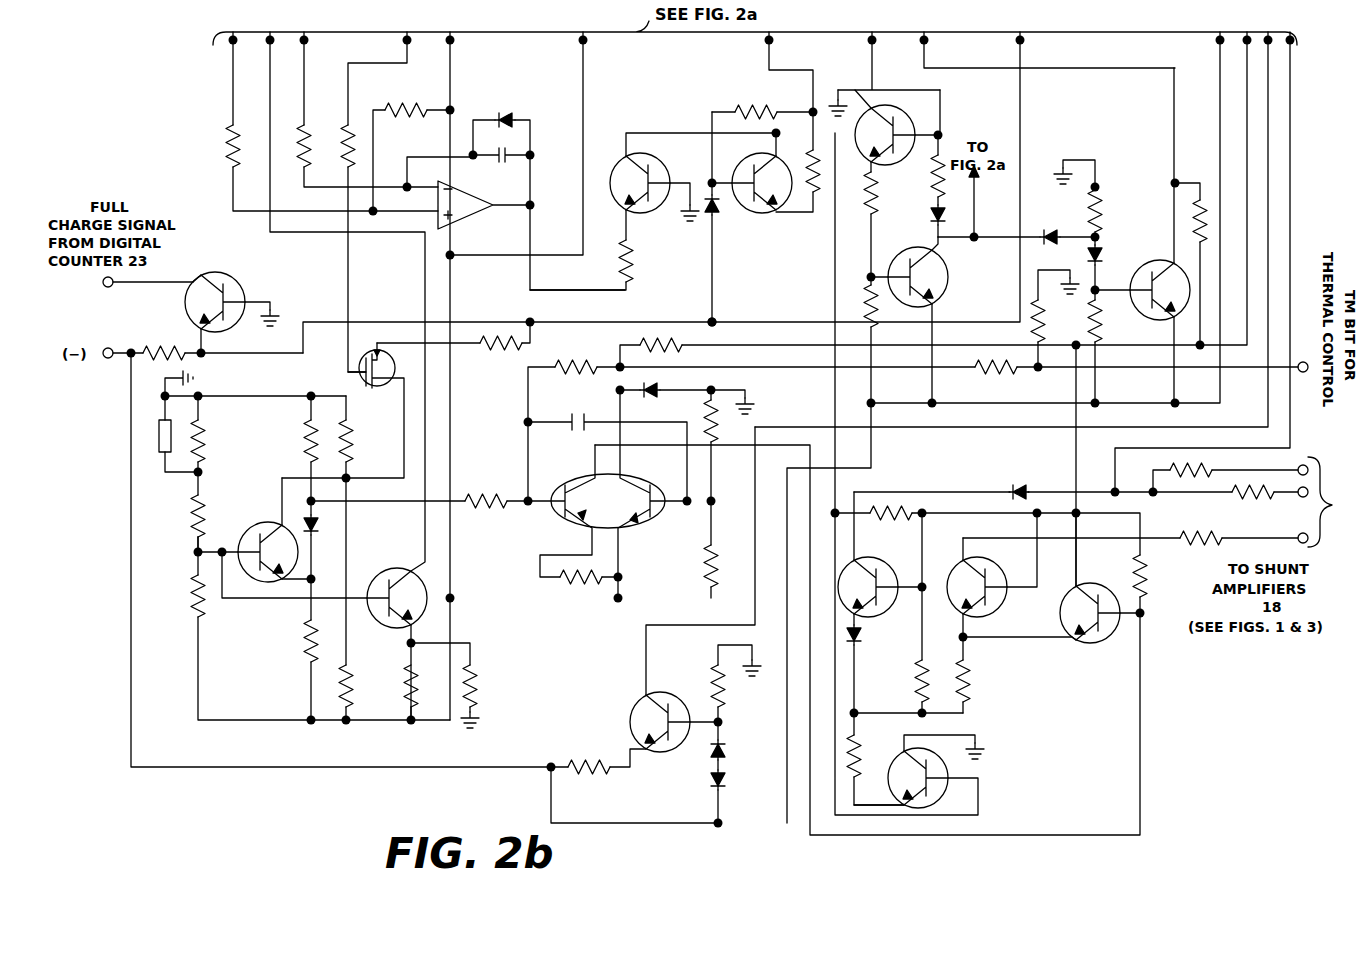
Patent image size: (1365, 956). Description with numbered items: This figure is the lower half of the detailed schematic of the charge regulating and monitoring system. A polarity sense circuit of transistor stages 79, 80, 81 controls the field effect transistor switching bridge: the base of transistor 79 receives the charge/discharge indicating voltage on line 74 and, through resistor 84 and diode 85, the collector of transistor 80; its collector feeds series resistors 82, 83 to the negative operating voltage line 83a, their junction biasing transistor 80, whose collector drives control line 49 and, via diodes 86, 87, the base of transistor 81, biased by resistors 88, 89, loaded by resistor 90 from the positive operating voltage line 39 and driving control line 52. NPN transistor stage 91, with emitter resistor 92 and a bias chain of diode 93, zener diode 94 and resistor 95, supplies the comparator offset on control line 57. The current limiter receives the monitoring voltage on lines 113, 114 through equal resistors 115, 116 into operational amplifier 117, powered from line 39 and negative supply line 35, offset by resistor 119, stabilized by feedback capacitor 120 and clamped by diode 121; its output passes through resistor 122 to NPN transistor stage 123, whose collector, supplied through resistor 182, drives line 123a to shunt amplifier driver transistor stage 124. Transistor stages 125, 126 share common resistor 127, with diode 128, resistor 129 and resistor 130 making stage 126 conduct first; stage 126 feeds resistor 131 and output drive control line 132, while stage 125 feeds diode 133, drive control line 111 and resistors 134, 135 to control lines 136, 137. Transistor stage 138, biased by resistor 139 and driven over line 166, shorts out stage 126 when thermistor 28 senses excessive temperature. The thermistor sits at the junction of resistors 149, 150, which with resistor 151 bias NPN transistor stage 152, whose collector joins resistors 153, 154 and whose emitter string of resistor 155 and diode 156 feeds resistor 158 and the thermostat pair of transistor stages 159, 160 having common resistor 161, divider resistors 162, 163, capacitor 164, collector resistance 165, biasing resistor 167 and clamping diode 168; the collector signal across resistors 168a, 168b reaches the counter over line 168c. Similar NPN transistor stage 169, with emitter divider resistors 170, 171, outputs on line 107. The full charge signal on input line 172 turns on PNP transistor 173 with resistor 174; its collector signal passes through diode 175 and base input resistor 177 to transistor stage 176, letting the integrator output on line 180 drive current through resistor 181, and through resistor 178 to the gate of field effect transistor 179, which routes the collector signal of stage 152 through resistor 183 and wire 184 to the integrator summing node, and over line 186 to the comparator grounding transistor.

The thermistor 28 is at (160, 430).
The negative supply line 35 is at (585, 103).
The positive operating voltage line 39 is at (452, 84).
The control line 49 is at (976, 196).
The control line 52 is at (934, 68).
The control line 57 is at (1270, 84).
The line 74 is at (880, 90).
The transistor stage 79 is at (898, 110).
The transistor stage 80 is at (941, 253).
The transistor stage 81 is at (1143, 267).
The resistor 82 is at (870, 198).
The resistor 83 is at (870, 294).
The negative operating voltage line 83a is at (1218, 74).
The resistor 84 is at (931, 176).
The diode 85 is at (933, 223).
The diode 86 is at (1047, 216).
The diode 87 is at (1103, 259).
The resistor 88 is at (1100, 316).
The resistor 89 is at (1103, 189).
The resistor 90 is at (1195, 221).
The NPN transistor stage 91 is at (657, 690).
The resistor 92 is at (588, 774).
The diode 93 is at (728, 777).
The zener diode 94 is at (728, 749).
The resistor 95 is at (728, 699).
The line 107 is at (268, 74).
The drive control line 111 is at (1292, 113).
The line 113 is at (225, 72).
The line 114 is at (306, 65).
The resistor 115 is at (226, 152).
The resistor 116 is at (303, 134).
The operational amplifier stage 117 is at (467, 220).
The resistor 119 is at (394, 119).
The feedback capacitor 120 is at (500, 157).
The diode 121 is at (506, 114).
The resistor 122 is at (640, 254).
The NPN transistor stage 123 is at (608, 195).
The line 123a is at (833, 239).
The shunt amplifier driver transistor stage 124 is at (947, 768).
The transistor stage 125 is at (868, 617).
The transistor stage 126 is at (993, 608).
The common resistor 127 is at (863, 752).
The diode 128 is at (860, 646).
The resistor 129 is at (967, 661).
The resistor 130 is at (918, 689).
The resistor 131 is at (1191, 534).
The output drive control line 132 is at (1273, 537).
The diode 133 is at (1023, 488).
The resistor 134 is at (1203, 472).
The resistor 135 is at (1240, 496).
The control line 136 is at (1253, 471).
The control line 137 is at (1268, 496).
The transistor stage 138 is at (1077, 643).
The resistor 139 is at (1146, 573).
The resistor 149 is at (203, 426).
The resistor 150 is at (202, 506).
The resistor 151 is at (307, 426).
The NPN transistor stage 152 is at (250, 529).
The resistor 153 is at (350, 433).
The resistor 154 is at (352, 668).
The resistor 155 is at (306, 647).
The diode 156 is at (330, 519).
The resistor 158 is at (502, 483).
The transistor stage 159 is at (553, 522).
The transistor stage 160 is at (656, 512).
The common resistor 161 is at (567, 582).
The resistor 162 is at (707, 560).
The resistor 163 is at (712, 428).
The capacitor 164 is at (580, 412).
The resistance 165 is at (673, 350).
The line 166 is at (912, 837).
The biasing resistor 167 is at (557, 363).
The diode 168 is at (647, 394).
The resistor 168a is at (994, 371).
The resistor 168b is at (1061, 321).
The line 168c is at (1240, 370).
The NPN transistor stage 169 is at (373, 580).
The resistor 170 is at (407, 689).
The resistor 171 is at (480, 684).
The input line 172 is at (172, 283).
The PNP transistor 173 is at (233, 275).
The resistor 174 is at (150, 347).
The diode 175 is at (714, 208).
The transistor stage 176 is at (764, 214).
The base input resistor 177 is at (760, 99).
The resistor 178 is at (512, 343).
The field effect transistor 179 is at (358, 377).
The line 180 is at (770, 68).
The resistor 181 is at (812, 167).
The resistor 182 is at (893, 500).
The resistor 183 is at (353, 128).
The wire 184 is at (391, 64).
The line 186 is at (1022, 106).